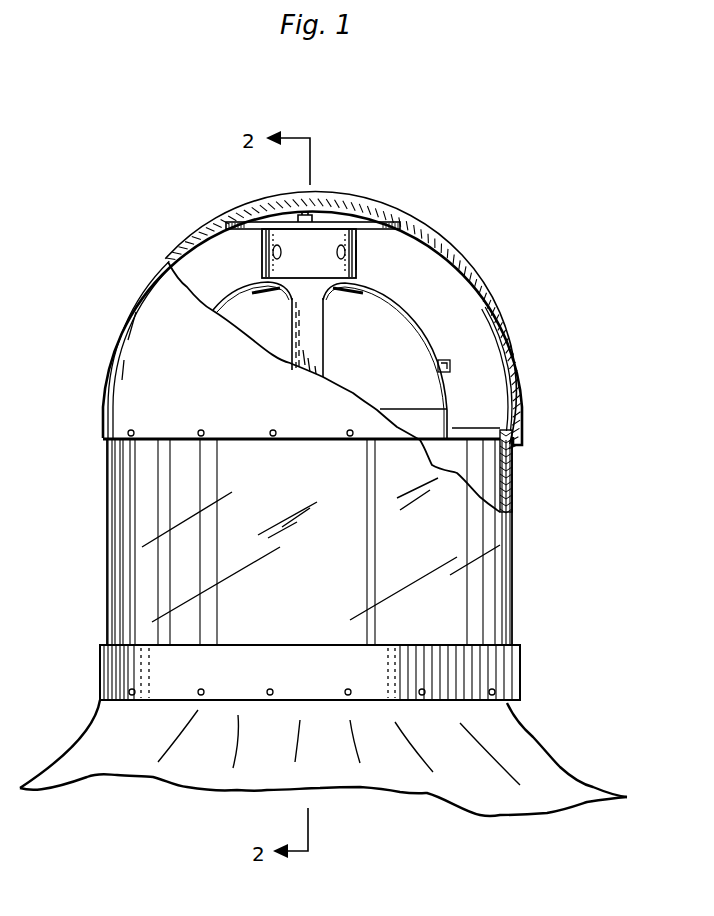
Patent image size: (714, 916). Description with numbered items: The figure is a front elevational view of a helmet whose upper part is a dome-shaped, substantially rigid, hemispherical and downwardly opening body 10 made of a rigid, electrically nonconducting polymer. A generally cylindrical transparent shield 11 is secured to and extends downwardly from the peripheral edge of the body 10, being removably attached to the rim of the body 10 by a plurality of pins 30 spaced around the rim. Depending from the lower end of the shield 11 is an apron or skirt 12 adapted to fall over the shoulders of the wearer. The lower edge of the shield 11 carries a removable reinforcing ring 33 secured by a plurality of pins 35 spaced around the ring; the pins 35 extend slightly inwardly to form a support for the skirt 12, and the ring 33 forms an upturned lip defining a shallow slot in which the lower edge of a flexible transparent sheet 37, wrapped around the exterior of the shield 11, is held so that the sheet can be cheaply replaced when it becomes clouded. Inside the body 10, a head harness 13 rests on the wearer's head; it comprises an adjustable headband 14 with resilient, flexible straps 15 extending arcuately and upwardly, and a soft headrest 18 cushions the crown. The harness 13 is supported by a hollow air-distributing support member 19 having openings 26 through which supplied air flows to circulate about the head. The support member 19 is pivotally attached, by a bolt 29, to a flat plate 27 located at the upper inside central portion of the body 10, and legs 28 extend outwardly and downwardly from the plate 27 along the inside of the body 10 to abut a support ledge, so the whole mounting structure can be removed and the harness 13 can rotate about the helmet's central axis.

The dome-shaped body 10 is at (505, 328).
The transparent shield 11 is at (498, 466).
The apron or skirt 12 is at (522, 747).
The head harness 13 is at (409, 285).
The adjustable headband 14 is at (428, 415).
The straps 15 is at (230, 295).
The headrest 18 is at (270, 295).
The air-distributing support member 19 is at (372, 258).
The openings 26 is at (337, 252).
The flat plate 27 is at (355, 222).
The legs 28 is at (190, 252).
The bolt 29 is at (318, 215).
The pins 30 is at (201, 429).
The reinforcing ring 33 is at (237, 690).
The pins 35 is at (198, 694).
The flexible sheet 37 is at (512, 490).